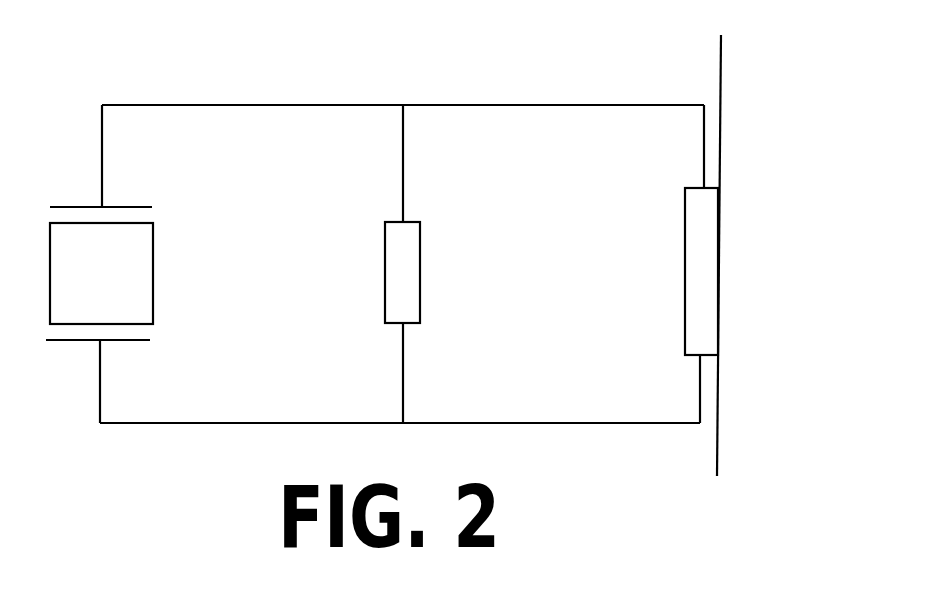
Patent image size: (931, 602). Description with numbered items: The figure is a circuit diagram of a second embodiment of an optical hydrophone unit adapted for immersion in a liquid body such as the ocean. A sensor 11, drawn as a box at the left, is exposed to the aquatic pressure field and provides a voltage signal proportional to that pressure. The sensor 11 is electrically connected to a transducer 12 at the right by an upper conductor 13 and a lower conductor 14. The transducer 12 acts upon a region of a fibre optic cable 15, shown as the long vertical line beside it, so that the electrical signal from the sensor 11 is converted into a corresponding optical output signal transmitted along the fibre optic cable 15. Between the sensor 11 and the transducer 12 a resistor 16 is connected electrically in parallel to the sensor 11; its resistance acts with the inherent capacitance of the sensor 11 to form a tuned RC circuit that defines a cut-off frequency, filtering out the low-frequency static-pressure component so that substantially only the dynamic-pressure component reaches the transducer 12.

The sensor 11 is at (135, 272).
The transducer 12 is at (698, 265).
The conductor 13 is at (553, 103).
The conductor 14 is at (518, 423).
The fibre optic cable 15 is at (722, 118).
The resistor 16 is at (413, 275).